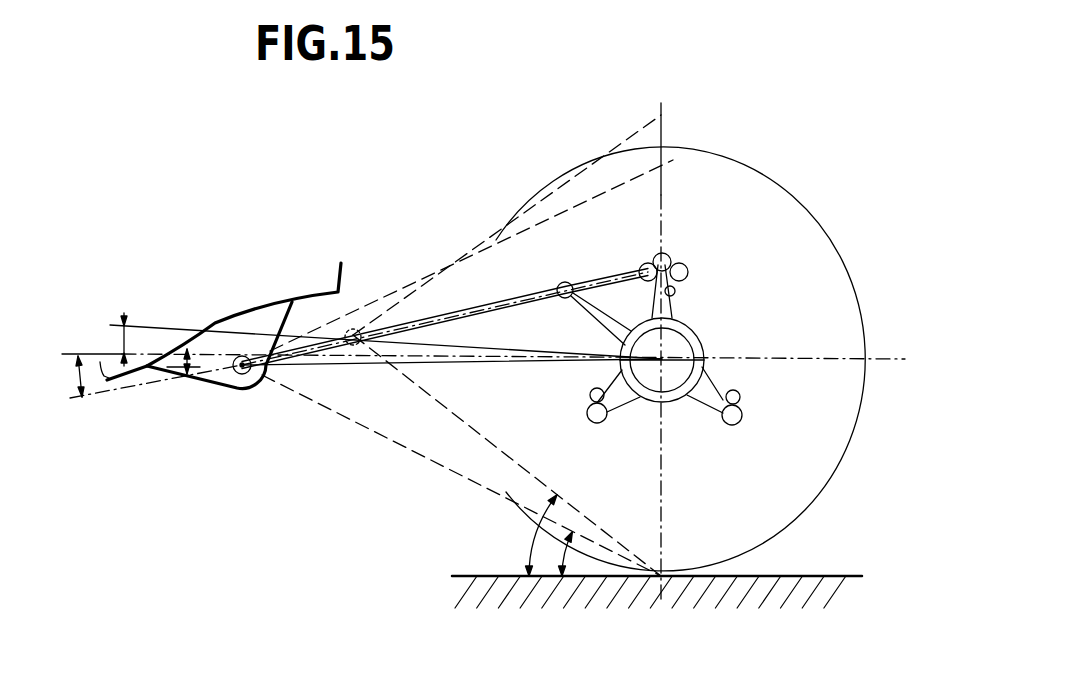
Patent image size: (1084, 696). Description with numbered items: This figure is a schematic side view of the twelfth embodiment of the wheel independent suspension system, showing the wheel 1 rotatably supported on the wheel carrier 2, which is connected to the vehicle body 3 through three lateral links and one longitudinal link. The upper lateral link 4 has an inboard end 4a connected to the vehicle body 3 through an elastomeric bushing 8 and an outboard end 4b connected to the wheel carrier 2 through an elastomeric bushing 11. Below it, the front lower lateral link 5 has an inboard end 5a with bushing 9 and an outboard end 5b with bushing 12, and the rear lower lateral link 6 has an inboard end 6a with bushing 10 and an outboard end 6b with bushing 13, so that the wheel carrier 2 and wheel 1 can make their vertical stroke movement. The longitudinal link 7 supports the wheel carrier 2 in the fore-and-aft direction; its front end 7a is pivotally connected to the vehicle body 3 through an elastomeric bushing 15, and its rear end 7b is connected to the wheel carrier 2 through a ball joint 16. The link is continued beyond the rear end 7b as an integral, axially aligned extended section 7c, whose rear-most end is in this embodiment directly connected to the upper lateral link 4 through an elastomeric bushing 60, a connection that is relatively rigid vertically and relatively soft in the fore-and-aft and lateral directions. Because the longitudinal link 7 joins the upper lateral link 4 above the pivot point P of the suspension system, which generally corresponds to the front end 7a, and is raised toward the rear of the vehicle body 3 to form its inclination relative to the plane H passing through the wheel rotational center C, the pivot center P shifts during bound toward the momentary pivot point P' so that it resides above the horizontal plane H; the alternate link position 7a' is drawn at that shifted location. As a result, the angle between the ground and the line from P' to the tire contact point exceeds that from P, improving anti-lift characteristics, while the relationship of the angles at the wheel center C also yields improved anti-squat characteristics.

The wheel 1 is at (799, 196).
The wheel carrier 2 is at (704, 347).
The vehicle body 3 is at (318, 296).
The upper lateral link 4 is at (672, 278).
The inboard end of the upper lateral link 4a is at (727, 312).
The elastomeric bushing 8 is at (675, 291).
The outboard end of the upper lateral link 4b is at (704, 238).
The elastomeric bushing 11 is at (665, 253).
The front lower lateral link 5 is at (588, 400).
The inboard end of the front lower lateral link 5a is at (533, 387).
The elastomeric bushing 9 is at (590, 389).
The outboard end of the front lower lateral link 5b is at (575, 435).
The elastomeric bushing 12 is at (592, 422).
The rear lower lateral link 6 is at (742, 413).
The inboard end of the rear lower lateral link 6a is at (795, 387).
The elastomeric bushing 10 is at (741, 397).
The outboard end of the rear lower lateral link 6b is at (770, 436).
The elastomeric bushing 13 is at (733, 425).
The longitudinal link 7 is at (516, 309).
The front end of the longitudinal link 7a is at (236, 416).
The elastomeric bushing 15 is at (240, 375).
The displaced rod pivot end 7a' is at (372, 377).
The rear end of the longitudinal link 7b is at (540, 276).
The ball joint 16 is at (557, 288).
The extended section 7c is at (612, 273).
The elastomeric bushing 60 is at (687, 272).
The rotational center of the wheel C is at (667, 363).
The pivot point P is at (236, 367).
The momentary pivot point P' is at (375, 332).
The horizontal plane H is at (66, 352).